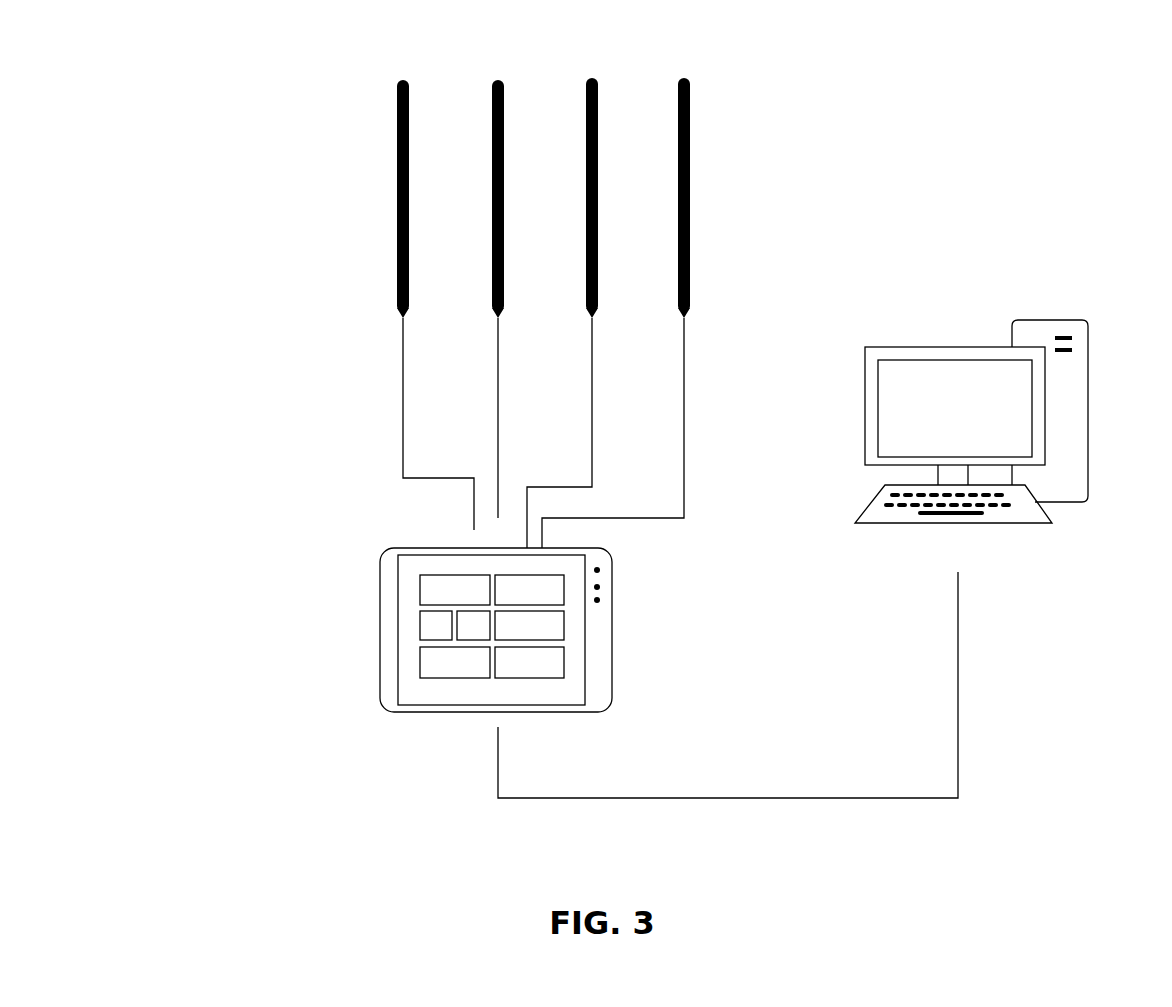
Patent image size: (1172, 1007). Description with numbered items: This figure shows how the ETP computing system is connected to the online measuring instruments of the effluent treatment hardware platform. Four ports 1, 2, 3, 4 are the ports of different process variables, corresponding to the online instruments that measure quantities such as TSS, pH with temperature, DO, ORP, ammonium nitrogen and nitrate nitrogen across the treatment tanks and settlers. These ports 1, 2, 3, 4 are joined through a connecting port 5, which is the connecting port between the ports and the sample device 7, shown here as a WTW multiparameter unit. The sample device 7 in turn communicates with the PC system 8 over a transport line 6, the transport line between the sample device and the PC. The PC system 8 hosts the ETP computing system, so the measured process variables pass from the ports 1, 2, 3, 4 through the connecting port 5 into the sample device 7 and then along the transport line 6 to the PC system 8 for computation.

The port of different variables 1 is at (294, 165).
The port of different variables 2 is at (413, 165).
The port of different variables 3 is at (515, 165).
The port of different variables 4 is at (768, 165).
The connecting port 5 is at (457, 450).
The transport line 6 is at (618, 696).
The sample device 7 is at (612, 592).
The PC system 8 is at (997, 358).